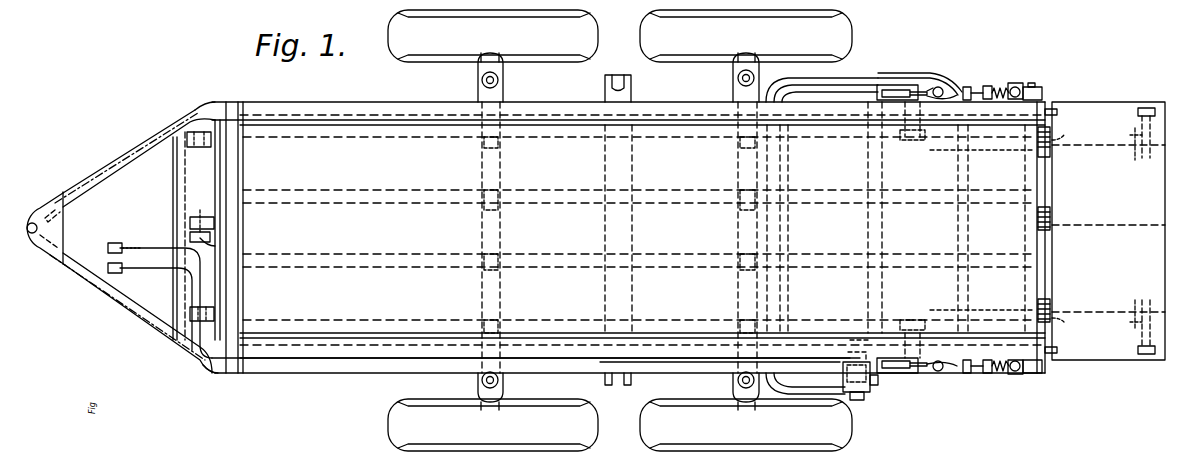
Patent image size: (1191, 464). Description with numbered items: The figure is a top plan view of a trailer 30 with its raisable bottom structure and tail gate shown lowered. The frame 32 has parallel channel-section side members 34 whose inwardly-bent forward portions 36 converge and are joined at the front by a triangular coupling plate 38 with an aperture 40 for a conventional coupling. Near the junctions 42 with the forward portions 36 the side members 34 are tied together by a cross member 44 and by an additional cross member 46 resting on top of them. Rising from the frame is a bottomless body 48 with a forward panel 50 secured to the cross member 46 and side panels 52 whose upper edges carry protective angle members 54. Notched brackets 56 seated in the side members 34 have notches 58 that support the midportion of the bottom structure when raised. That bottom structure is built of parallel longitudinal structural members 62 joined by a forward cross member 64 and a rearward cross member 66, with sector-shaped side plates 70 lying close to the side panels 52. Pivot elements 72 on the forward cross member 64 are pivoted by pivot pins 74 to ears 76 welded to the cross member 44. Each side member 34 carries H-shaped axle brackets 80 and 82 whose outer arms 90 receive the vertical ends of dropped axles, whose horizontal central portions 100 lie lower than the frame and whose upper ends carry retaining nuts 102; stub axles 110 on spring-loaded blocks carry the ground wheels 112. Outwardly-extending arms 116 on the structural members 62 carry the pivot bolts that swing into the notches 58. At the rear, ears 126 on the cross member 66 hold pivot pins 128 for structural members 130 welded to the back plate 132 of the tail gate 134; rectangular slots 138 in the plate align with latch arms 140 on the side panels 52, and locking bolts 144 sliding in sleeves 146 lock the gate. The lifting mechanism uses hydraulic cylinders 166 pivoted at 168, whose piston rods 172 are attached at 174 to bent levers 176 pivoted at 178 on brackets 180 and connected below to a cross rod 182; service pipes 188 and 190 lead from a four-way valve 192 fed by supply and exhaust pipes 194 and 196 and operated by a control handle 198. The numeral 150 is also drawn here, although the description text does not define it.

The trailer 30 is at (879, 57).
The frame 32 is at (158, 119).
The side members 34 is at (225, 103).
The forward portions 36 is at (118, 158).
The triangular coupling plate 38 is at (58, 222).
The aperture 40 is at (32, 222).
The junctions 42 is at (207, 98).
The cross member 44 is at (173, 202).
The additional cross member 46 is at (226, 182).
The trailer body 48 is at (342, 367).
The forward panel 50 is at (252, 223).
The side panels 52 is at (360, 119).
The angle members 54 is at (325, 104).
The notched brackets 56 is at (631, 90).
The notches 58 is at (618, 74).
The longitudinal structural members 62 is at (398, 140).
The forward structural cross member 64 is at (198, 236).
The rearward structural cross member 66 is at (1022, 240).
The side plates 70 is at (656, 128).
The pivot elements 72 is at (215, 244).
The pivot pins 74 is at (200, 218).
The ears 76 is at (190, 223).
The forward axle brackets 80 is at (468, 95).
The rearward axle brackets 82 is at (723, 93).
The outer arms 90 is at (499, 82).
The central portions 100 is at (478, 236).
The retaining nuts 102 is at (485, 79).
The stub axle 110 is at (503, 62).
The ground wheel 112 is at (490, 12).
The arms 116 is at (602, 172).
The ears 126 is at (1052, 162).
The pivot pins 128 is at (1064, 135).
The structural members 130 is at (1100, 232).
The back plate 132 is at (1102, 362).
The tail gate 134 is at (1133, 373).
The rectangular slots 138 is at (1146, 107).
The latch arms 140 is at (1055, 108).
The locking bolts 144 is at (1124, 233).
The sleeves 146 is at (1129, 229).
The frame member 150 is at (930, 457).
The hydraulic cylinders 166 is at (995, 85).
The pivotal mounting 168 is at (1035, 83).
The piston rods 172 is at (922, 104).
The pivotal attachment 174 is at (908, 104).
The bent levers 176 is at (891, 84).
The pivotal mounting 178 is at (886, 125).
The brackets 180 is at (962, 457).
The cross rod 182 is at (960, 244).
The service pipe 188 is at (937, 86).
The service pipe 190 is at (818, 78).
The four-way valve 192 is at (854, 360).
The pressure fluid supply pipe 194 is at (154, 272).
The pressure fluid exhaust pipe 196 is at (150, 247).
The control handle 198 is at (858, 402).